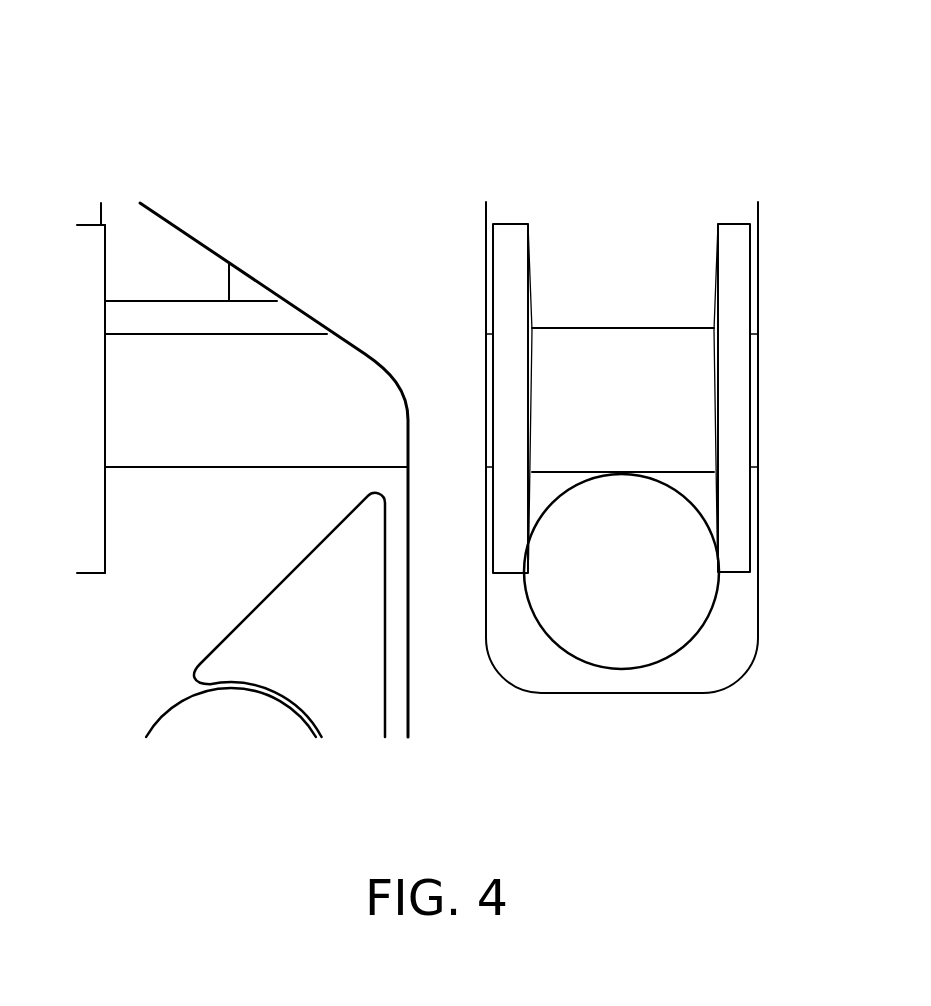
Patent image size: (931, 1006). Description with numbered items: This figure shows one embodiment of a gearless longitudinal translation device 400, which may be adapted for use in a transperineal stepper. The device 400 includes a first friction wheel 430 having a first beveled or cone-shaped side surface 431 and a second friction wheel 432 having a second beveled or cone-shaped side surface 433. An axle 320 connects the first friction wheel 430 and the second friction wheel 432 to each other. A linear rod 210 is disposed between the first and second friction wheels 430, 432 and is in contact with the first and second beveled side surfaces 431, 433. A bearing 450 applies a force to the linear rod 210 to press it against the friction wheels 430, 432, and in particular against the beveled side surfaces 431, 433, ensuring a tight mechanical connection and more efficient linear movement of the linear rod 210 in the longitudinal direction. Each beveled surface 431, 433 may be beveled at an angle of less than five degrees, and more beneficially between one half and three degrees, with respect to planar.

The gearless longitudinal translation device 400 is at (710, 85).
The bearing 450 is at (634, 678).
The first friction wheel 430 is at (510, 222).
The second friction wheel 432 is at (732, 223).
The first beveled side surface 431 is at (538, 299).
The second beveled side surface 433 is at (706, 299).
The axle 320 is at (648, 407).
The linear rod 210 is at (621, 571).